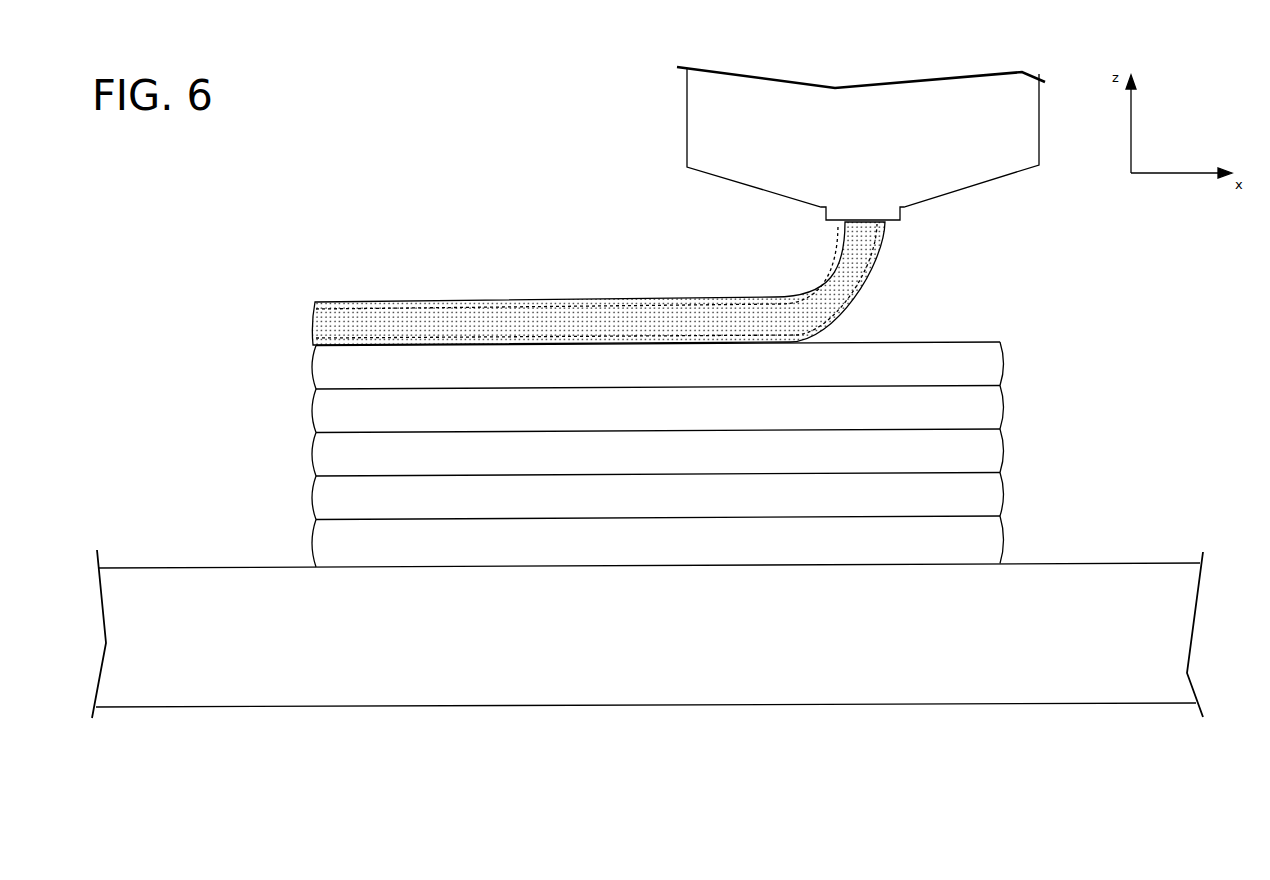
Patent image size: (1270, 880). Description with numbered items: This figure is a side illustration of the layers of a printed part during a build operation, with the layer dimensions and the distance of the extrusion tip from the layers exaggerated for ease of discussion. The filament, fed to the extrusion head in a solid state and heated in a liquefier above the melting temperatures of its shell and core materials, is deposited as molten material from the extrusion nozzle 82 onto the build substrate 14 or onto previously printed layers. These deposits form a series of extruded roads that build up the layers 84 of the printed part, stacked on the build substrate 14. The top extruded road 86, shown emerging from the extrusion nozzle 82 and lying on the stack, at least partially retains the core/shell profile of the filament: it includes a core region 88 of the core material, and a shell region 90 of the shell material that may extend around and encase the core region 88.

The build substrate 14 is at (272, 697).
The extrusion nozzle 82 is at (702, 122).
The layers 84 is at (204, 303).
The top extruded road 86 is at (569, 278).
The core region 88 is at (413, 318).
The shell region 90 is at (498, 342).